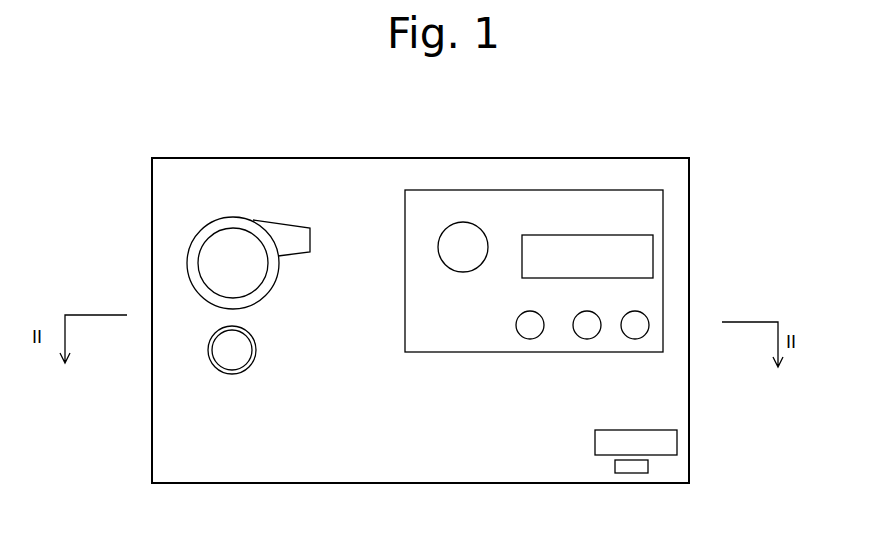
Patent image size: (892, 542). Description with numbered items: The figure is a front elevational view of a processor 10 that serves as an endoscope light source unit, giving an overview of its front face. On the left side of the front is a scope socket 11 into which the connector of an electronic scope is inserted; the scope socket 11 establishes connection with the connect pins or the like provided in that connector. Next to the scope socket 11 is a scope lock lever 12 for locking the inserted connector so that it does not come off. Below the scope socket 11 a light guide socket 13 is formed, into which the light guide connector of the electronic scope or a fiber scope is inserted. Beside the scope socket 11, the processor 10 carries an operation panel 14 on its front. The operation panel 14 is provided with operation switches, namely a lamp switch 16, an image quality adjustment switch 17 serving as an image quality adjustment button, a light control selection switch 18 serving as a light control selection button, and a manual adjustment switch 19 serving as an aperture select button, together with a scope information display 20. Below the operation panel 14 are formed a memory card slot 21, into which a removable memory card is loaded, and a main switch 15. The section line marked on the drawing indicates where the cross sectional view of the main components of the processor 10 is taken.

The processor 10 is at (401, 142).
The scope socket 11 is at (230, 243).
The scope lock lever 12 is at (285, 237).
The light guide socket 13 is at (222, 353).
The operation panel 14 is at (618, 207).
The main switch 15 is at (645, 466).
The lamp switch 16 is at (463, 248).
The image quality adjustment switch 17 is at (530, 331).
The light control selection switch 18 is at (587, 331).
The manual adjustment switch 19 is at (635, 331).
The scope information display 20 is at (649, 257).
The memory card slot 21 is at (675, 441).